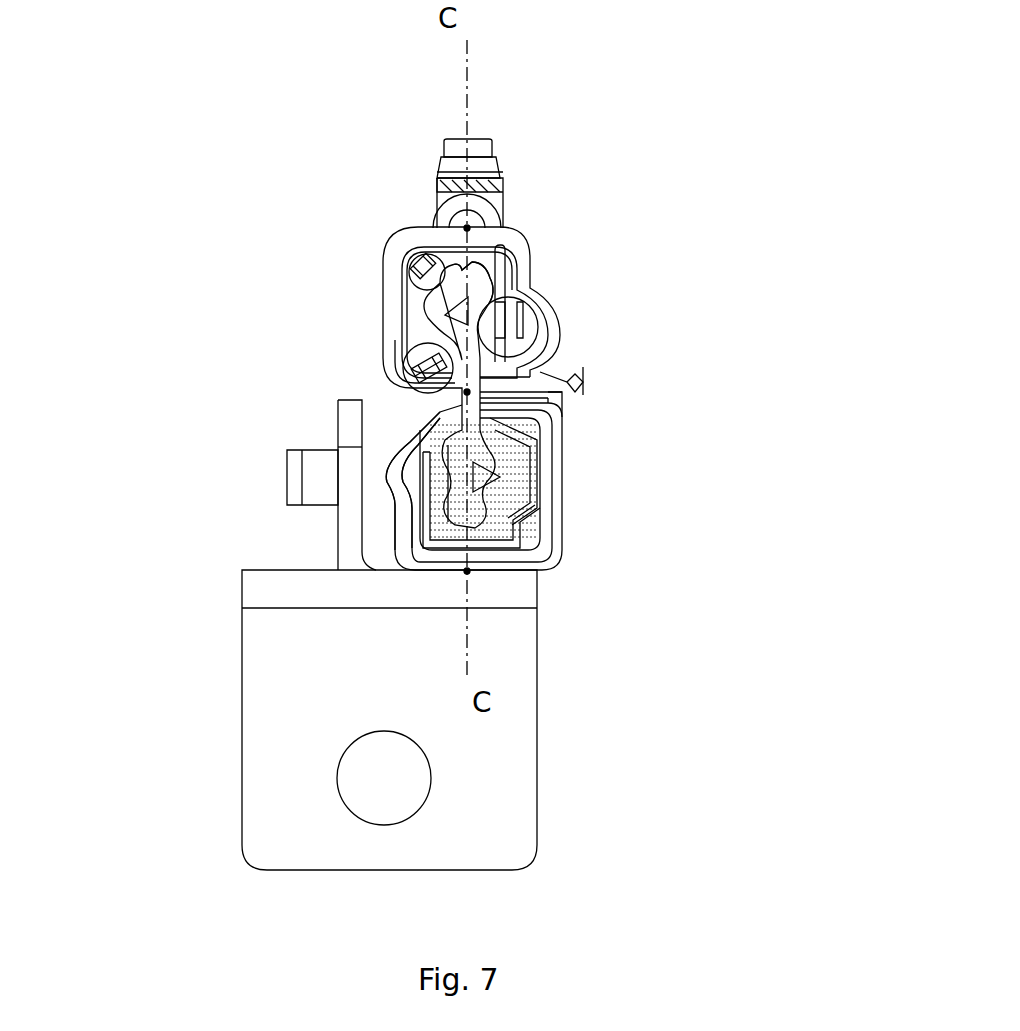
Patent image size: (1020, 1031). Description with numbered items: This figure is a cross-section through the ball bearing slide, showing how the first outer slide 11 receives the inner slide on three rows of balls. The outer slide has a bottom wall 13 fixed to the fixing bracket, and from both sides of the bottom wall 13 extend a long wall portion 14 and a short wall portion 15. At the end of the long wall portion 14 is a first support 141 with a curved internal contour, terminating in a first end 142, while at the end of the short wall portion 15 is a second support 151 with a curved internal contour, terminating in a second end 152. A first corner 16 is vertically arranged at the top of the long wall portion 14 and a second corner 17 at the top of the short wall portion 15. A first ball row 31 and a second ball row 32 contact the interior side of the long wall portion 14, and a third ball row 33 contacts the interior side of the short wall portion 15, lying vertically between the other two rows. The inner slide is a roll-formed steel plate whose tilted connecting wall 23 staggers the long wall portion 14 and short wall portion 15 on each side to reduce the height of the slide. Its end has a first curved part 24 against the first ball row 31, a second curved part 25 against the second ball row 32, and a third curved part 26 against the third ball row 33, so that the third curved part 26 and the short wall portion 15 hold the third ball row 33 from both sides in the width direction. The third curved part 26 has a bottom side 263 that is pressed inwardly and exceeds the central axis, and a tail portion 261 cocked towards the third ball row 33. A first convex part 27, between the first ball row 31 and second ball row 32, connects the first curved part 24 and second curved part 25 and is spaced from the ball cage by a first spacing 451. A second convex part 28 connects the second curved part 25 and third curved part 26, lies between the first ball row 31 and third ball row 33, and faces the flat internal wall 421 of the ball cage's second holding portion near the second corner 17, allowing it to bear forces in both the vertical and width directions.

The first outer slide 11 is at (552, 480).
The bottom wall 13 is at (510, 577).
The long wall portion 14 is at (562, 457).
The short wall portion 15 is at (397, 478).
The first corner 16 is at (412, 228).
The second corner 17 is at (522, 262).
The connecting wall 23 is at (480, 396).
The first curved part 24 is at (410, 350).
The second curved part 25 is at (400, 270).
The third curved part 26 is at (505, 310).
The first convex part 27 is at (412, 340).
The second convex part 28 is at (490, 287).
The first ball row 31 is at (400, 262).
The second ball row 32 is at (405, 380).
The third ball row 33 is at (550, 300).
The first support 141 is at (400, 391).
The first end 142 is at (562, 408).
The second support 151 is at (522, 320).
The second end 152 is at (525, 350).
The tail portion 261 is at (540, 368).
The bottom side 263 is at (505, 287).
The internal wall 421 is at (493, 273).
The first spacing 451 is at (415, 355).